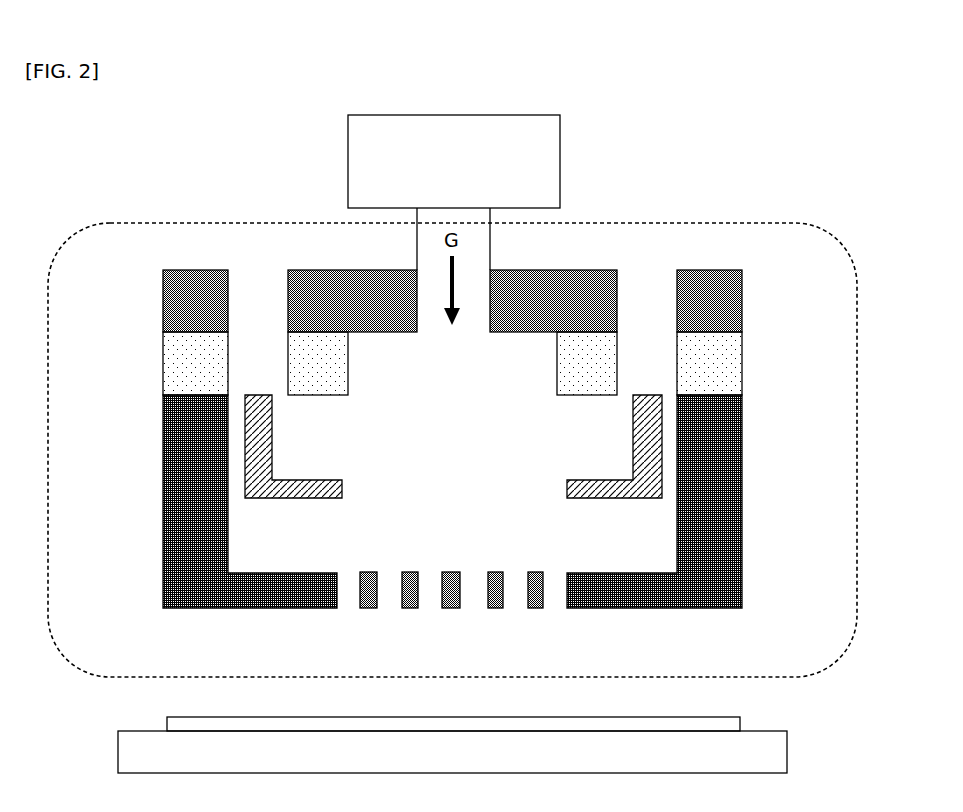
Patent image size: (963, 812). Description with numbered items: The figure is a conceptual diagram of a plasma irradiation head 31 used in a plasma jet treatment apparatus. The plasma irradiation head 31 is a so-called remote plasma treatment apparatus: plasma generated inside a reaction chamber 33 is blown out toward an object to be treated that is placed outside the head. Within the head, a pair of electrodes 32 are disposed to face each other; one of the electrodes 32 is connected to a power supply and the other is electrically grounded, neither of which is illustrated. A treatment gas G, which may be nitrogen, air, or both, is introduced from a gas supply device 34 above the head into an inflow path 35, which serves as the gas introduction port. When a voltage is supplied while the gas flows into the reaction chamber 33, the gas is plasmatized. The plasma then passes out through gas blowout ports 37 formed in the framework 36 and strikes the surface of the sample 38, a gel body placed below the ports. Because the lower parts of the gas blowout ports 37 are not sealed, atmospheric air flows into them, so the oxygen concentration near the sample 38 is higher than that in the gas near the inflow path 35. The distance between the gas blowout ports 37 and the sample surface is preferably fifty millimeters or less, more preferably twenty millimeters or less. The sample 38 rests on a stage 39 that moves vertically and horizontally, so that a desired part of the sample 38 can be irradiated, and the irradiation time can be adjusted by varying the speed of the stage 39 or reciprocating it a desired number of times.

The plasma irradiation head 31 is at (452, 444).
The electrodes 32 is at (451, 446).
The reaction chamber 33 is at (694, 501).
The gas supply device 34 is at (454, 192).
The inflow path 35 is at (452, 317).
The framework 36 is at (223, 531).
The gas blowout ports 37 is at (348, 600).
The sample 38 is at (488, 706).
The stage 39 is at (484, 740).